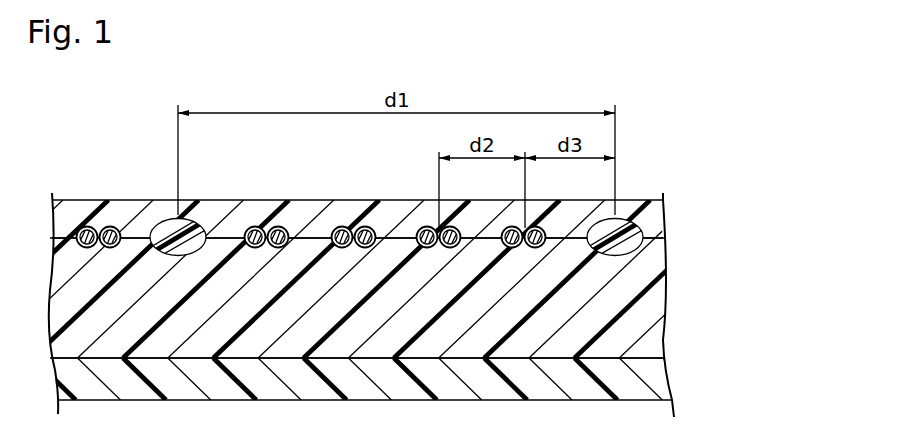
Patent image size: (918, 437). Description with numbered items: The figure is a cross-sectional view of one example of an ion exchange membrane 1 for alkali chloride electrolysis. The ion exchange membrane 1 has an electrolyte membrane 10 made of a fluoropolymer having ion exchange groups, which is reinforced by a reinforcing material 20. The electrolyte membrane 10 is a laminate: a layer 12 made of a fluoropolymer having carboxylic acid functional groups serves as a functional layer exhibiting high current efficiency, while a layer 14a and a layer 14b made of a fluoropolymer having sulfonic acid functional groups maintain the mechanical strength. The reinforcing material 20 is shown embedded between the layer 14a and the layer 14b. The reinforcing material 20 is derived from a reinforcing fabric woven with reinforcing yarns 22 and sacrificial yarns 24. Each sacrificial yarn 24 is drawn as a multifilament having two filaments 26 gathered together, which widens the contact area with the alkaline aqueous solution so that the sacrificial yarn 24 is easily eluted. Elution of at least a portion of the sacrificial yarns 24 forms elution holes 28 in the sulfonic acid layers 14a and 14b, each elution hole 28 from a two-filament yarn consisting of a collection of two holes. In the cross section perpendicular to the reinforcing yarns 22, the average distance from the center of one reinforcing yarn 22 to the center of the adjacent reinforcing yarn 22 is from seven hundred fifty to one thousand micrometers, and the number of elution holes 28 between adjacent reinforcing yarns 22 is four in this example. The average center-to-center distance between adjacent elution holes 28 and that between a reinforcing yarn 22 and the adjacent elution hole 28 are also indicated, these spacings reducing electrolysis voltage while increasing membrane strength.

The ion exchange membrane for alkali chloride electrolysis 1 is at (652, 128).
The electrolyte membrane 10 is at (757, 178).
The layer made of a fluoropolymer having carboxylic acid functional groups 12 is at (657, 380).
The layer made of a fluoropolymer having sulfonic acid functional groups 14a is at (657, 213).
The layer made of a fluoropolymer having sulfonic acid functional groups 14b is at (657, 267).
The reinforcing material 20 is at (657, 227).
The reinforcing yarn 22 is at (177, 233).
The sacrificial yarn 24 is at (123, 162).
The filament 26 is at (81, 230).
The elution hole 28 is at (124, 217).